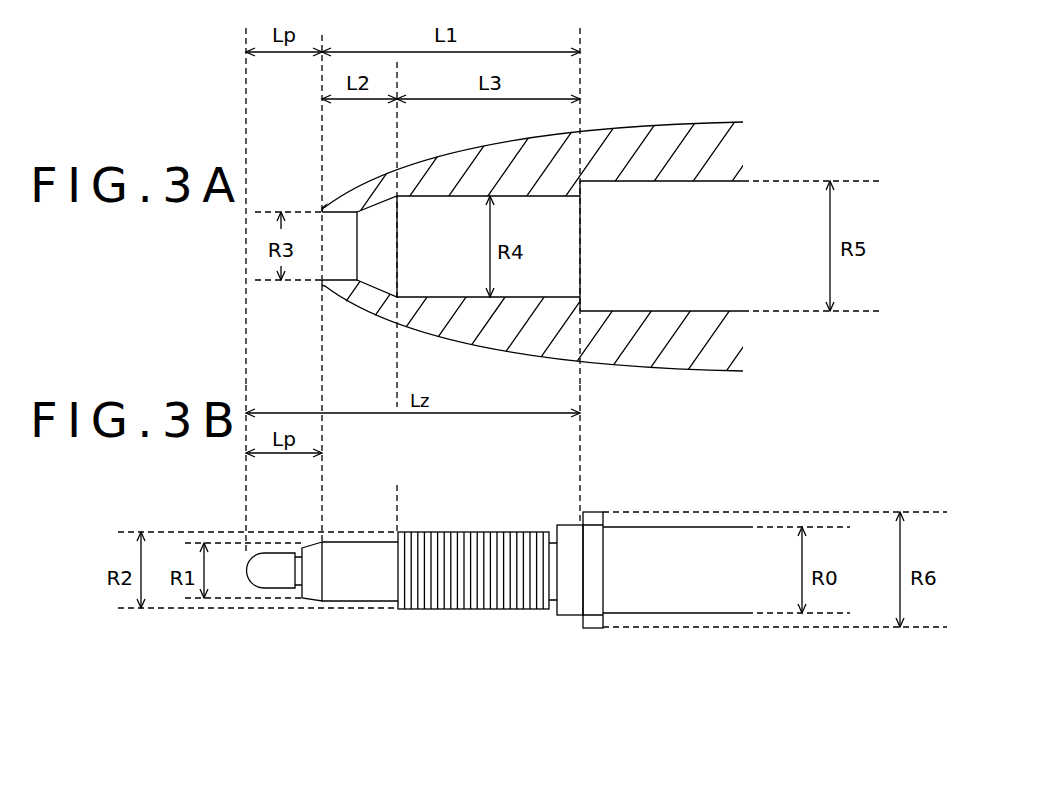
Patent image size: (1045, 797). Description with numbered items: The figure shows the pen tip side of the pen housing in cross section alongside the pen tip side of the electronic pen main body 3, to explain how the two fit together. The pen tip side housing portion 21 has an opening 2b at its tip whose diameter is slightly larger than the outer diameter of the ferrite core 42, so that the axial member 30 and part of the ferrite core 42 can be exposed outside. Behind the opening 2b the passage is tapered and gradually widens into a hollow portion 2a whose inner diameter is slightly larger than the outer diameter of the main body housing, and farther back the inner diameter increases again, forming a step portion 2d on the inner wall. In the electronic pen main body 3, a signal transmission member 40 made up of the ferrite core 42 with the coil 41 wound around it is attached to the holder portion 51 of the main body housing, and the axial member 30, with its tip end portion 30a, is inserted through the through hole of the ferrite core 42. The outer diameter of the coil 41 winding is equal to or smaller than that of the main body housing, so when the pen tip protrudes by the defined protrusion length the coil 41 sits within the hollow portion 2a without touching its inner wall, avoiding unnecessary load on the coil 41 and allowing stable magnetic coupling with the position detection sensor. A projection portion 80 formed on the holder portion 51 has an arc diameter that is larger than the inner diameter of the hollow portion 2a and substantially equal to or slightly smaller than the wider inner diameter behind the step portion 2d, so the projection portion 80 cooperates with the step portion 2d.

In FIG. 3A, the hollow portion 2a is at (703, 197).
In FIG. 3A, the opening 2b is at (327, 228).
In FIG. 3A, the step portion 2d is at (582, 192).
In FIG. 3A, the pen tip side housing portion 21 is at (673, 138).
In FIG. 3B, the electronic pen main body 3 is at (568, 622).
In FIG. 3B, the axial member 30 is at (287, 594).
In FIG. 3B, the tip end portion 30a is at (256, 578).
In FIG. 3B, the signal transmission member 40 is at (435, 624).
In FIG. 3B, the coil 41 is at (473, 603).
In FIG. 3B, the ferrite core 42 is at (378, 590).
In FIG. 3B, the holder portion 51 is at (688, 600).
In FIG. 3B, the projection portion 80 is at (590, 512).